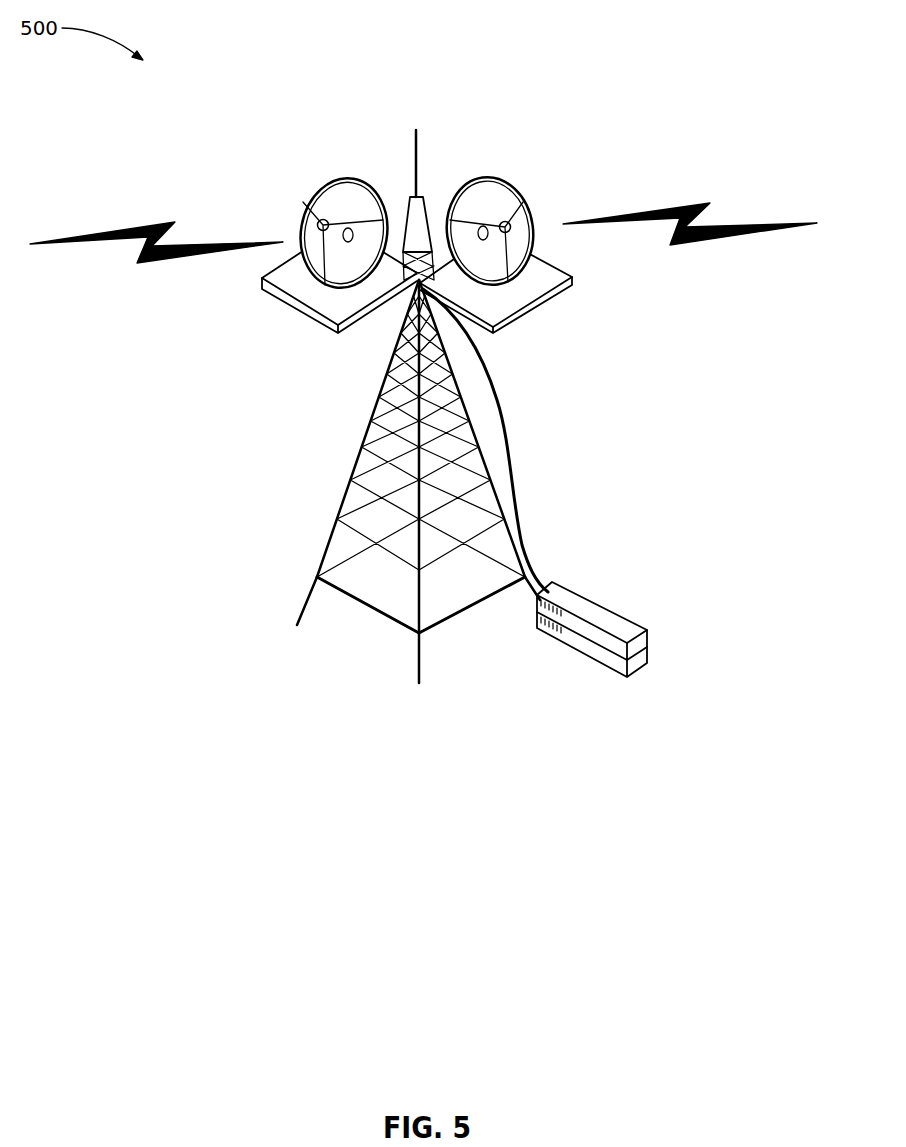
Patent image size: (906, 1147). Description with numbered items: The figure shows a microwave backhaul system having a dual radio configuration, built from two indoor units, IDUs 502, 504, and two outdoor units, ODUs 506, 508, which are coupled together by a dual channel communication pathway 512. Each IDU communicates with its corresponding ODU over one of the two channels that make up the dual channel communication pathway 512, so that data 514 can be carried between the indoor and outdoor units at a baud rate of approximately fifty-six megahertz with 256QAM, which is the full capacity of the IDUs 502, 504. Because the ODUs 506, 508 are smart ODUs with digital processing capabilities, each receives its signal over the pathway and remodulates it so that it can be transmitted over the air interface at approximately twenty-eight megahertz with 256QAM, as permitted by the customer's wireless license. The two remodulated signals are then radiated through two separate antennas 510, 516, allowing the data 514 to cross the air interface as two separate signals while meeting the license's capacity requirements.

The IDU 502 is at (615, 622).
The IDU 504 is at (633, 667).
The ODU 506 is at (565, 290).
The ODU 508 is at (270, 309).
The antenna 510 is at (462, 178).
The dual channel communication pathway 512 is at (502, 413).
The data 514 is at (519, 478).
The antenna 516 is at (340, 178).